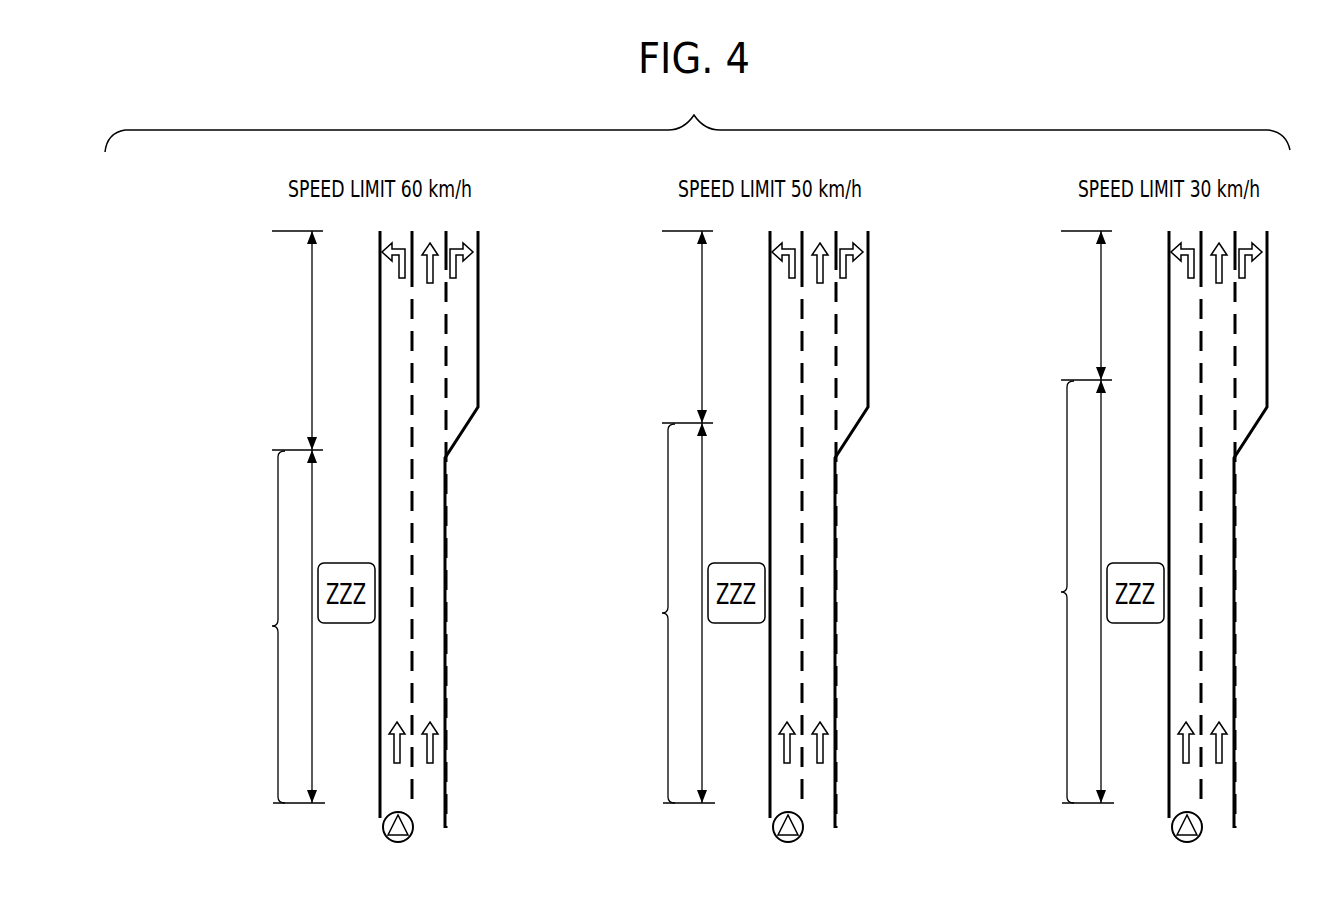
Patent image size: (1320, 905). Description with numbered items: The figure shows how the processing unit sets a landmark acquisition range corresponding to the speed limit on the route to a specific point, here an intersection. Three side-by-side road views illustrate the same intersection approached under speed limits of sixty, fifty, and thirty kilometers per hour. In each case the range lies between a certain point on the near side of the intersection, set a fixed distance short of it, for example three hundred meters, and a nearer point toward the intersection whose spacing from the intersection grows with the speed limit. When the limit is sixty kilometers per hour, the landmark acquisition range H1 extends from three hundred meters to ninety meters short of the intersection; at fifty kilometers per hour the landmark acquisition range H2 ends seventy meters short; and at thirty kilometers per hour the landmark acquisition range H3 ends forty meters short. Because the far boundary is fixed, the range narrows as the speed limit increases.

The landmark acquisition range H1 is at (262, 627).
The landmark acquisition range H2 is at (652, 613).
The landmark acquisition range H3 is at (1051, 592).